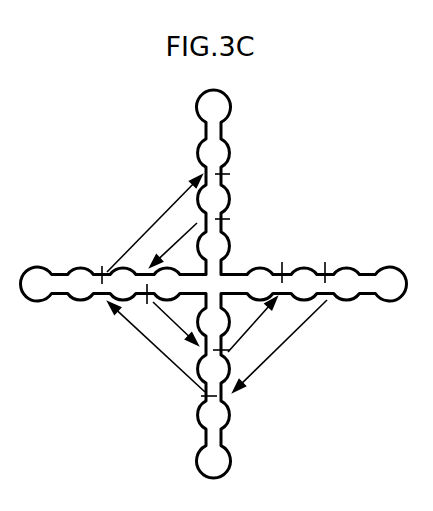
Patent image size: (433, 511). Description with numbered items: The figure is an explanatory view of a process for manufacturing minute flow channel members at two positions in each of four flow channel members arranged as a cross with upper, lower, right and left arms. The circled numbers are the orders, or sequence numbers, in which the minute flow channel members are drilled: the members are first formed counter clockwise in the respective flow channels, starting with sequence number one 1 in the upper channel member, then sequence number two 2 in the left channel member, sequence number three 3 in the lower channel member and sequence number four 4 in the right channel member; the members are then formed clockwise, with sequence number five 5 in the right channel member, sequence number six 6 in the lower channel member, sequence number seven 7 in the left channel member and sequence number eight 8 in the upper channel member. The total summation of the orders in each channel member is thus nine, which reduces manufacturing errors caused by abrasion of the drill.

The sequence number one 1 is at (230, 219).
The sequence number two 2 is at (148, 303).
The sequence number three 3 is at (227, 350).
The sequence number four 4 is at (283, 262).
The sequence number five 5 is at (326, 262).
The sequence number six 6 is at (200, 396).
The sequence number seven 7 is at (102, 266).
The sequence number eight 8 is at (230, 174).